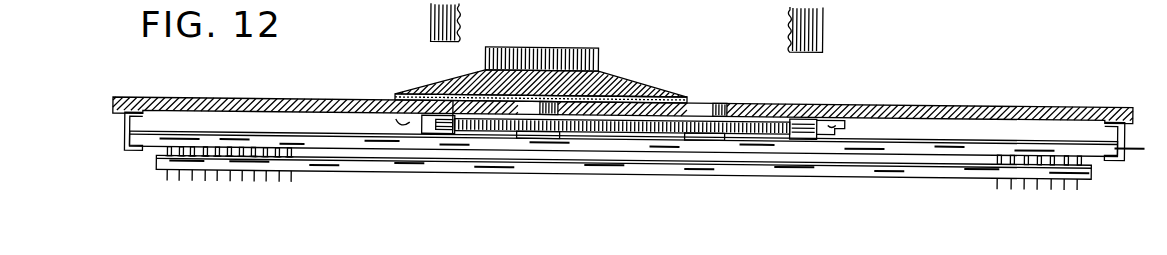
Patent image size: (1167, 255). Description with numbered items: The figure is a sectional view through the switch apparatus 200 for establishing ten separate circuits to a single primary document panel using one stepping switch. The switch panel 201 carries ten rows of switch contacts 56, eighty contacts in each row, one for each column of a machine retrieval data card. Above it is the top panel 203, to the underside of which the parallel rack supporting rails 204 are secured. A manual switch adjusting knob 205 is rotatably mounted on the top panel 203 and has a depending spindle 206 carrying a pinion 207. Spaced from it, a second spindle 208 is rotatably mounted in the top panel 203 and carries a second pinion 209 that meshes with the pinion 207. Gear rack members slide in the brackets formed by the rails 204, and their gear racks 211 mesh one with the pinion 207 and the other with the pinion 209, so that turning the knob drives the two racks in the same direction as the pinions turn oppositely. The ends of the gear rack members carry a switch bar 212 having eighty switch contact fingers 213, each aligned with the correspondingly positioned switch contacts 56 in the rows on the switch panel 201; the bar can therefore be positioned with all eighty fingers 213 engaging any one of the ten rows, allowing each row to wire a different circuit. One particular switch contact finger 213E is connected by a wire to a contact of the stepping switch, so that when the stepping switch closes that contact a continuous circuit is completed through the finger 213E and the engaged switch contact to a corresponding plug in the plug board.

The circuit board assembly 200 is at (151, 84).
The switch panel 201 is at (1094, 177).
The top panel 203 is at (303, 85).
The rack supporting rails 204 is at (410, 119).
The manual switch adjusting knob 205 is at (600, 57).
The depending spindle 206 is at (543, 93).
The pinion 207 is at (458, 128).
The spindle 208 is at (699, 108).
The second pinion 209 is at (797, 88).
The gear racks 211 is at (388, 104).
The switch bar 212 is at (918, 139).
The switch contact fingers 213 is at (1057, 163).
The switch contact finger 213E is at (223, 148).
The switch contact 56 is at (993, 163).